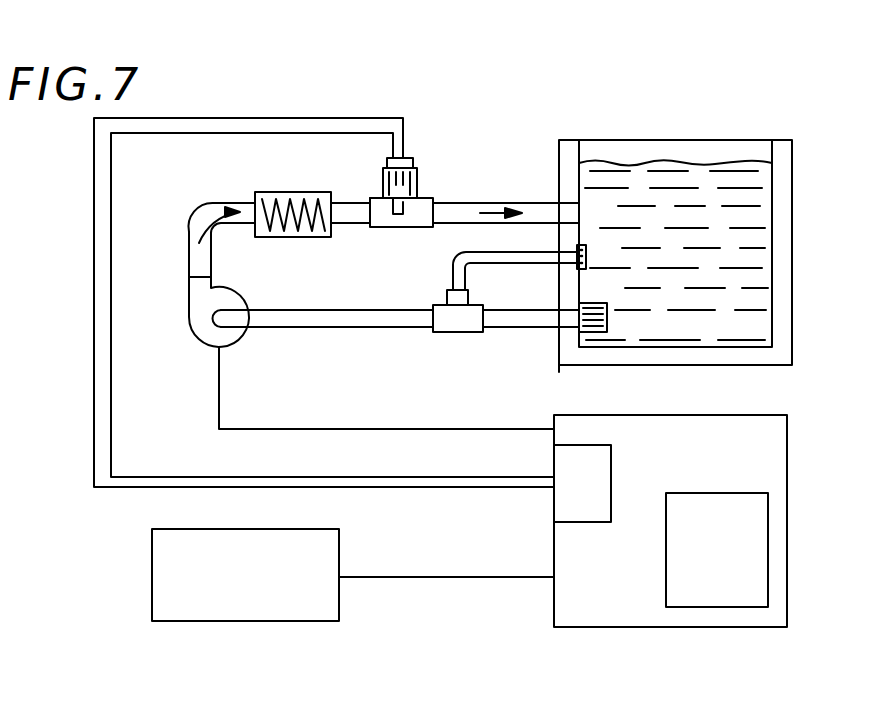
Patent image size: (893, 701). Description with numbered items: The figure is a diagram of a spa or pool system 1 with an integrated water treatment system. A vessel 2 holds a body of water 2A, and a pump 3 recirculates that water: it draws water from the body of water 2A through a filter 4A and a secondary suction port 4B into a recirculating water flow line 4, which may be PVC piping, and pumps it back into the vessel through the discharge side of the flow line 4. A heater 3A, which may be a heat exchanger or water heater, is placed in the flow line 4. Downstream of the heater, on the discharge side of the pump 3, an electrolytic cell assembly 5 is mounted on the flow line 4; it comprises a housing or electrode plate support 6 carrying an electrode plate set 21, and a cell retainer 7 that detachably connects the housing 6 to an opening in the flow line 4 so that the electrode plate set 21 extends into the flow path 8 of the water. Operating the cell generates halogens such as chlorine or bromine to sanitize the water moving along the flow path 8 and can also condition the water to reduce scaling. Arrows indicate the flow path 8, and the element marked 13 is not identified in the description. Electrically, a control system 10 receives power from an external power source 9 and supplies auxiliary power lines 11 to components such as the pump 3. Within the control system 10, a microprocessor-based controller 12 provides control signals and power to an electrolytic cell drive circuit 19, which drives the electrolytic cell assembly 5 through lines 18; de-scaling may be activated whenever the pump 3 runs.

The spa or pool system 1 is at (278, 102).
The vessel 2 is at (792, 153).
The body of water 2A is at (660, 178).
The pump 3 is at (193, 333).
The heater 3A is at (285, 192).
The recirculating water flow line 4 is at (361, 328).
The filter 4A is at (675, 285).
The secondary suction port 4B is at (655, 237).
The electrolytic cell assembly 5 is at (414, 150).
The electrolytic cell housing 6 is at (418, 178).
The cell retainer 7 is at (420, 198).
The flow path 8 is at (213, 230).
The external power source 9 is at (152, 554).
The control system 10 is at (738, 415).
The auxiliary power lines 11 is at (299, 429).
The microprocessor-based controller 12 is at (718, 493).
The valve 13 is at (368, 188).
The lines 18 is at (111, 173).
The electrolytic cell drive circuit 19 is at (611, 470).
The electrode plate set 21 is at (393, 214).